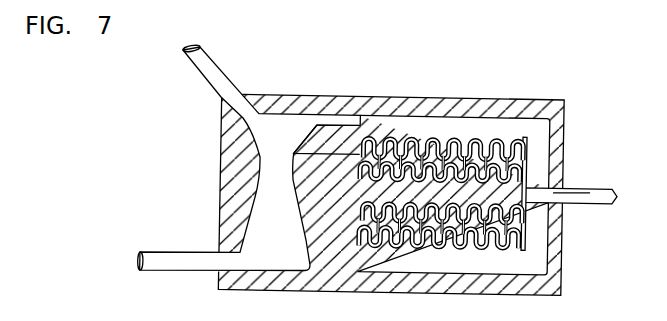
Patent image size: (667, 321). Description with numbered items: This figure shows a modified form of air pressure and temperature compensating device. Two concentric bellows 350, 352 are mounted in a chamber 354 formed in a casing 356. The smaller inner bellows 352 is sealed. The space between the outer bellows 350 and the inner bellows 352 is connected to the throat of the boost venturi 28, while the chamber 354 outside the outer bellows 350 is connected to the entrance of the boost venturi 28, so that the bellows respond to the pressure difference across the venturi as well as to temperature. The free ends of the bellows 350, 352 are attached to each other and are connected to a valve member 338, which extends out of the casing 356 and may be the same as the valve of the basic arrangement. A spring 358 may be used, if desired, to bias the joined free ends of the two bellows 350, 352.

The boost venturi 28 is at (285, 200).
The valve member 338 is at (583, 202).
The bellows 350 is at (442, 137).
The bellows 352 is at (488, 205).
The chamber 354 is at (507, 125).
The casing 356 is at (557, 134).
The spring 358 is at (471, 247).